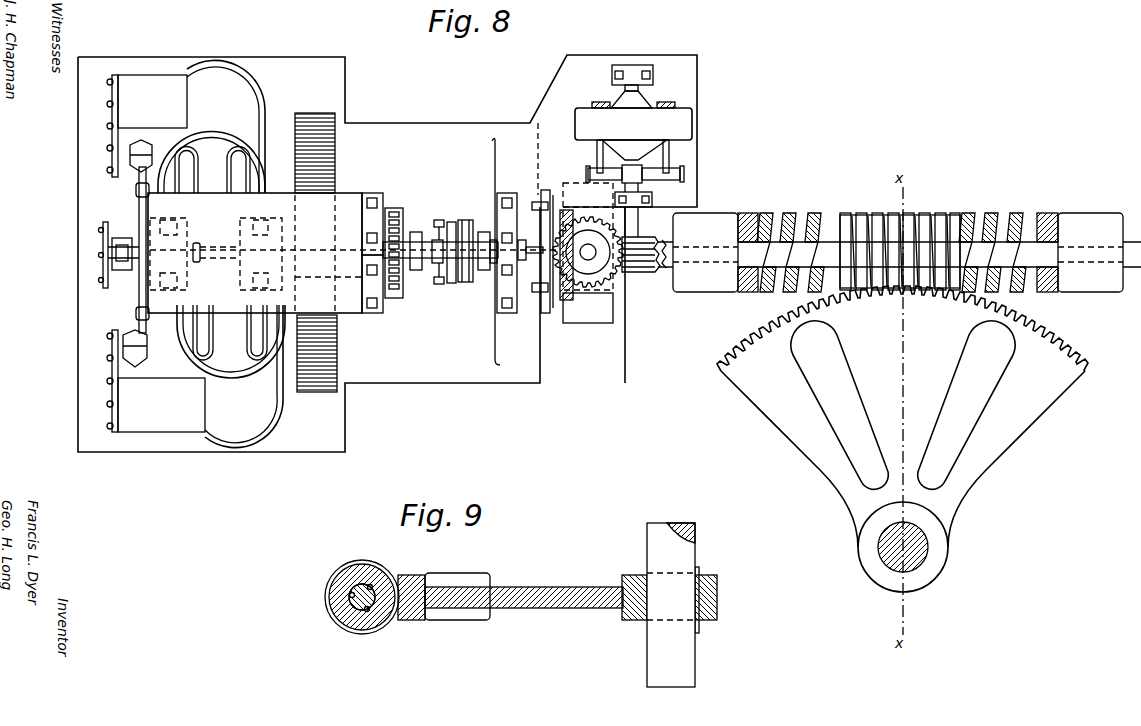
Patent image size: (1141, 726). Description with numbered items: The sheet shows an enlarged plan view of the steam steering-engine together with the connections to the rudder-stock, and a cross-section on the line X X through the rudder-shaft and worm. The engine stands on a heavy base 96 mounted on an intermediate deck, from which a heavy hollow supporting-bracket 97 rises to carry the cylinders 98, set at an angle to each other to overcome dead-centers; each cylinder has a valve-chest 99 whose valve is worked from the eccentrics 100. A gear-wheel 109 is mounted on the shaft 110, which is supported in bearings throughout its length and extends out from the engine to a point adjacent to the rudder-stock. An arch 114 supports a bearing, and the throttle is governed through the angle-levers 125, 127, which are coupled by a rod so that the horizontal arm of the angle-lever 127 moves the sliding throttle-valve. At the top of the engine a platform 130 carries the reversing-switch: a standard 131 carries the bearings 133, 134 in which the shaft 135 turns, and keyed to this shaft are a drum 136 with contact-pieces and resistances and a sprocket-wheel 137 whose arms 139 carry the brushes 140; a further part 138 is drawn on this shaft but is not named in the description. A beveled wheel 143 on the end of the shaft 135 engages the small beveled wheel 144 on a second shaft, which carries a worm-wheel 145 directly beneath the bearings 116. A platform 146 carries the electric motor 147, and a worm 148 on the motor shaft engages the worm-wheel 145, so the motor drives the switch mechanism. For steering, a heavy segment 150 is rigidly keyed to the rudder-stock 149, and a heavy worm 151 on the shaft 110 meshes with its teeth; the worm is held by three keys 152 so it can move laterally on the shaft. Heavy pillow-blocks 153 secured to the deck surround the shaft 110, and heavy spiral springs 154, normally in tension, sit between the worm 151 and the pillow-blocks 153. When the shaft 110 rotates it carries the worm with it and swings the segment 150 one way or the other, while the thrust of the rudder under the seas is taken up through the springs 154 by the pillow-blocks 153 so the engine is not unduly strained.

In FIG. 8, the base 96 is at (387, 253).
In FIG. 8, the supporting-bracket 97 is at (221, 255).
In FIG. 8, the cylinders 98 is at (235, 253).
In FIG. 8, the valve-chest 99 is at (156, 253).
In FIG. 8, the eccentrics 100 is at (145, 265).
In FIG. 8, the gear-wheel 109 is at (337, 354).
In FIG. 8, the shaft 110 is at (1065, 245).
In FIG. 9, the shaft 110 is at (346, 622).
In FIG. 8, the arch 114 is at (600, 296).
In FIG. 8, the bearings 116 is at (613, 285).
In FIG. 8, the angle-lever 125 is at (552, 330).
In FIG. 8, the angle-lever 127 is at (118, 253).
In FIG. 8, the platform 130 is at (318, 236).
In FIG. 8, the standard 131 is at (368, 287).
In FIG. 8, the bearing 133 is at (370, 250).
In FIG. 8, the bearing 134 is at (508, 258).
In FIG. 8, the shaft 135 is at (532, 258).
In FIG. 8, the drum 136 is at (465, 222).
In FIG. 8, the sprocket-wheel 137 is at (405, 216).
In FIG. 8, the shaft disc 138 is at (440, 256).
In FIG. 8, the arms 139 is at (443, 232).
In FIG. 8, the brushes 140 is at (455, 282).
In FIG. 8, the beveled wheel 143 is at (563, 207).
In FIG. 8, the small beveled wheel 144 is at (597, 248).
In FIG. 8, the worm-wheel 145 is at (597, 258).
In FIG. 8, the platform 146 is at (683, 190).
In FIG. 8, the electric motor 147 is at (603, 133).
In FIG. 8, the worm 148 is at (640, 168).
In FIG. 8, the rudder-stock 149 is at (930, 555).
In FIG. 9, the rudder-stock 149 is at (685, 564).
In FIG. 8, the segment 150 is at (902, 416).
In FIG. 9, the segment 150 is at (575, 584).
In FIG. 8, the worm 151 is at (933, 223).
In FIG. 9, the worm 151 is at (373, 571).
In FIG. 9, the keys 152 is at (385, 625).
In FIG. 8, the pillow-blocks 153 is at (748, 214).
In FIG. 8, the spiral springs 154 is at (798, 221).